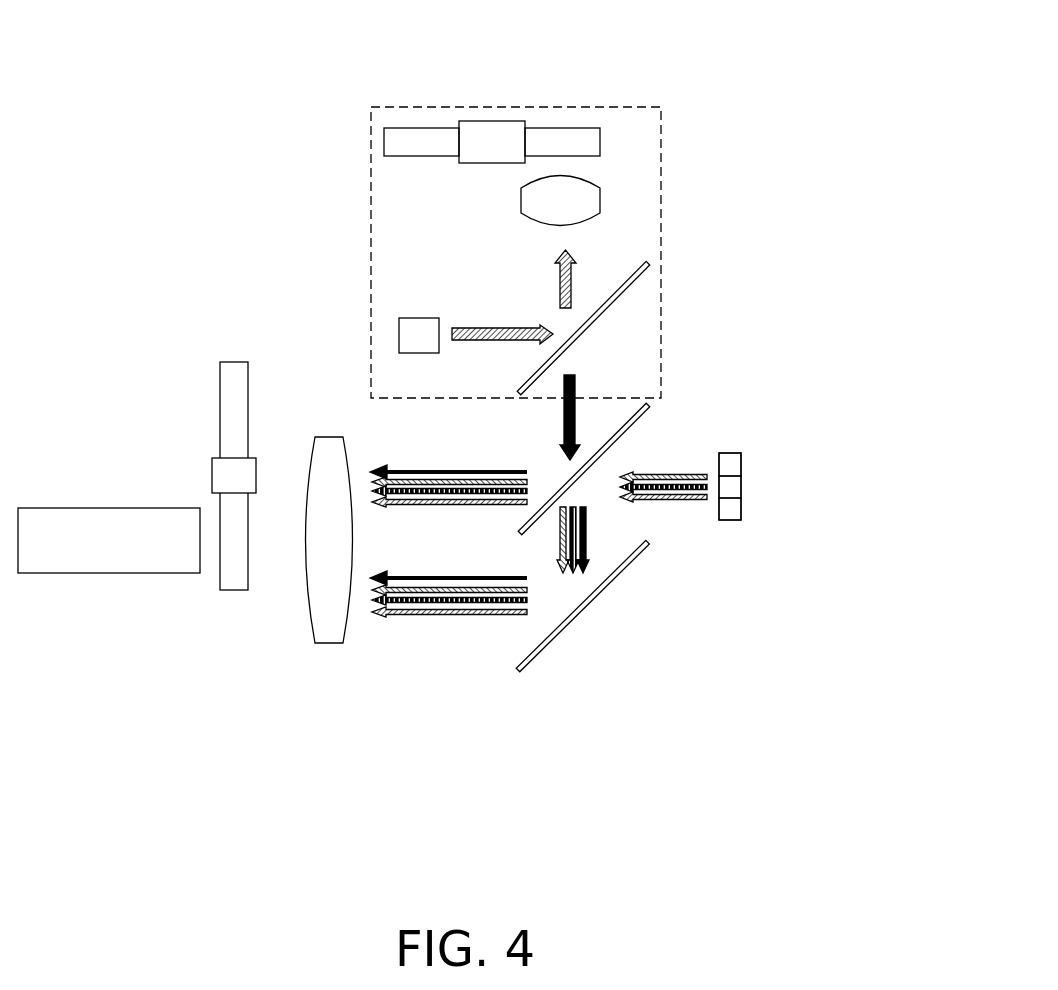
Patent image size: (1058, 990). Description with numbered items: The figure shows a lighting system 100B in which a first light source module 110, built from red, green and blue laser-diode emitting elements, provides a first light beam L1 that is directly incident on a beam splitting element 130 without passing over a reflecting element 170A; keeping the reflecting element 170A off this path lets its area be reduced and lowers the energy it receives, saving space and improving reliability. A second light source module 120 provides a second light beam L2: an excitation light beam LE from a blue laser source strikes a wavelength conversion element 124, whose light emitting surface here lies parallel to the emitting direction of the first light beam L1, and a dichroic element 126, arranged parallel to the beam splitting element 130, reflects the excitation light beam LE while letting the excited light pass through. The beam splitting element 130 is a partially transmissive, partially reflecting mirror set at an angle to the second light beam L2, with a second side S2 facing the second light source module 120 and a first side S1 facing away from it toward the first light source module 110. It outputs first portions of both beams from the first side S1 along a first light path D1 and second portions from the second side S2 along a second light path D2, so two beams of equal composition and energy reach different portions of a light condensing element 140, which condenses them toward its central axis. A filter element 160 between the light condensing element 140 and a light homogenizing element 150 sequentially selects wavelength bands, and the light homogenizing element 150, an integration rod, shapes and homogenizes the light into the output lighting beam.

The lighting system 100B is at (772, 815).
The first light source module 110 is at (882, 438).
The second light source module 120 is at (640, 107).
The wavelength conversion element 124 is at (384, 143).
The dichroic element 126 is at (625, 290).
The beam splitting element 130 is at (641, 430).
The light condensing element 140 is at (328, 643).
The light homogenizing element 150 is at (105, 573).
The filter element 160 is at (234, 590).
The reflecting element 170A is at (548, 644).
The first light beam L1 is at (682, 500).
The second light beam L2 is at (578, 385).
The excitation light beam LE is at (460, 328).
The first side S1 is at (618, 448).
The second side S2 is at (564, 484).
The first light path D1 is at (452, 616).
The second light path D2 is at (452, 468).